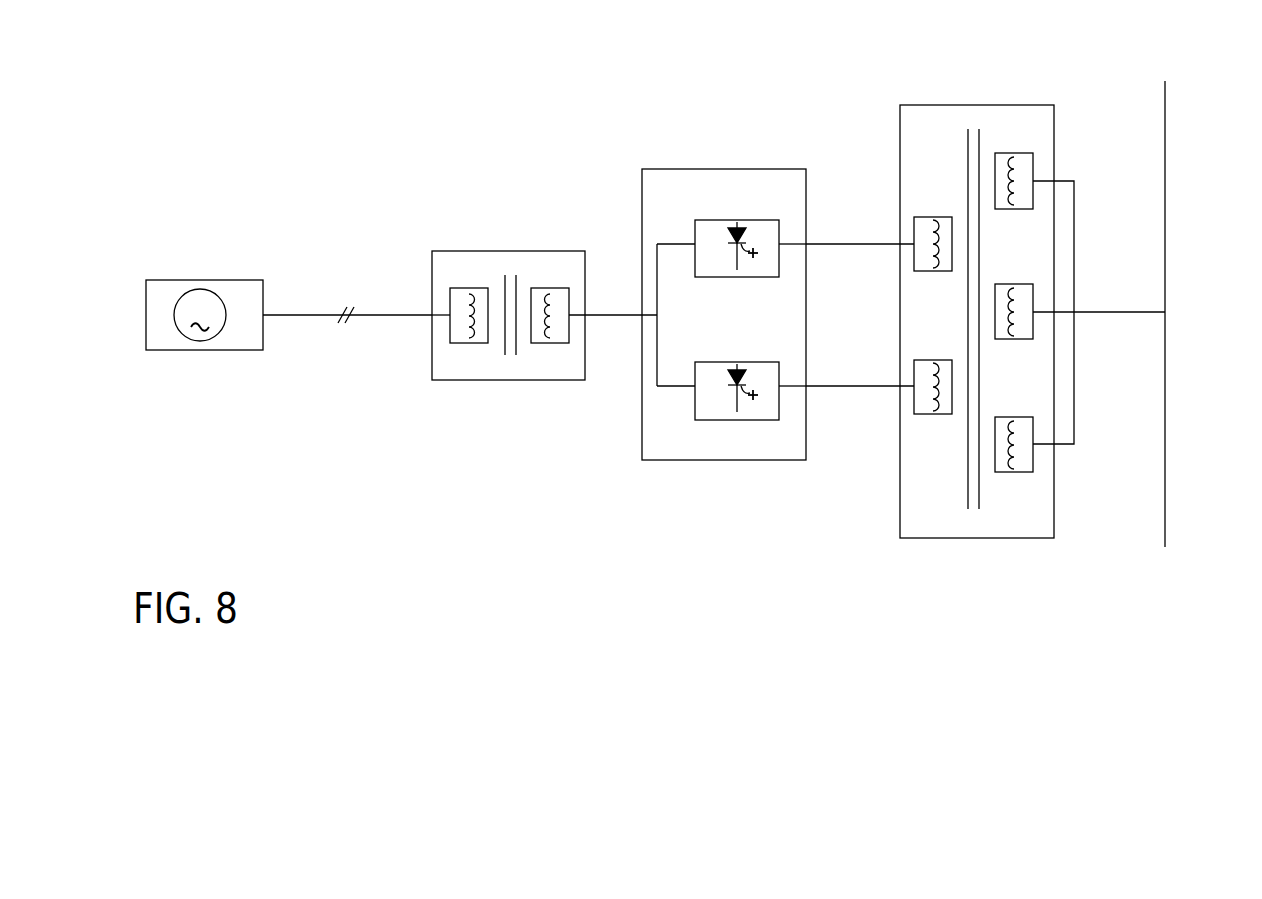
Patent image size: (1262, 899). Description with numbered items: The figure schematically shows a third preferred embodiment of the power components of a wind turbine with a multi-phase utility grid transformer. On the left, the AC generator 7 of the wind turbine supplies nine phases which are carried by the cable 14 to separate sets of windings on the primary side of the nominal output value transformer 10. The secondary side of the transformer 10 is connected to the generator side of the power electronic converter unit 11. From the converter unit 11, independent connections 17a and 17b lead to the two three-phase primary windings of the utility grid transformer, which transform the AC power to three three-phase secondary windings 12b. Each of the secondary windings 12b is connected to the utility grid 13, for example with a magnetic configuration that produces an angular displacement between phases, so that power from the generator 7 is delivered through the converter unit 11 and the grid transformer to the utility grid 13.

The AC generator 7 is at (230, 280).
The cable 14 is at (308, 315).
The nominal output value transformer 10 is at (497, 251).
The power electronic converter unit 11 is at (756, 169).
The independent connection 17a is at (849, 244).
The independent connection 17b is at (850, 386).
The three-phase secondary windings 12b is at (947, 105).
The utility grid 13 is at (1165, 154).